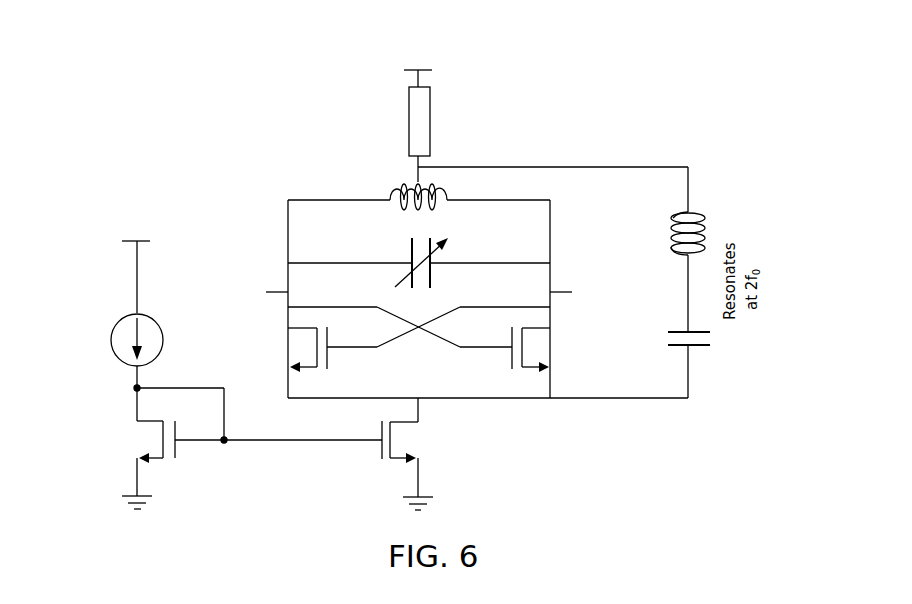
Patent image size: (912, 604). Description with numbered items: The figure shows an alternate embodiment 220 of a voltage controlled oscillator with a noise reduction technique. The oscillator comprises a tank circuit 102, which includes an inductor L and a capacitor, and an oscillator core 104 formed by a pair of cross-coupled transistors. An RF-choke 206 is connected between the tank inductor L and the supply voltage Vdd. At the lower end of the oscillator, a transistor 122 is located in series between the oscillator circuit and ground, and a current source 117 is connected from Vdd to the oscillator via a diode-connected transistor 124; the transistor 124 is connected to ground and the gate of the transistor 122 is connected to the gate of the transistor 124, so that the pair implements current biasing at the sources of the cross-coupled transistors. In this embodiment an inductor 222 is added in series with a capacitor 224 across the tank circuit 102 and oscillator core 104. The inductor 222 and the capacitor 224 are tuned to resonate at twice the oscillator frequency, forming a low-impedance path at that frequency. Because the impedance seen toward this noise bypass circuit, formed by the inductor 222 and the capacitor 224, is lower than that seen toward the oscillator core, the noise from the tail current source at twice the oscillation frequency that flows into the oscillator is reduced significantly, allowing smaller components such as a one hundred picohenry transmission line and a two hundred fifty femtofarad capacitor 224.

The tank circuit 102 is at (569, 211).
The oscillator core 104 is at (564, 349).
The current source 117 is at (112, 337).
The transistor 122 is at (400, 462).
The diode-connected transistor 124 is at (157, 461).
The RF-choke T1 206 is at (409, 121).
The alternate embodiment 220 is at (664, 81).
The inductor 222 is at (700, 222).
The capacitor 224 is at (700, 347).